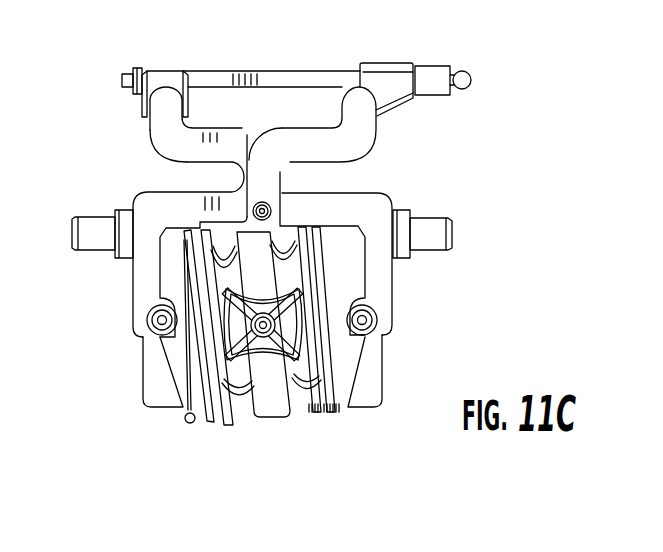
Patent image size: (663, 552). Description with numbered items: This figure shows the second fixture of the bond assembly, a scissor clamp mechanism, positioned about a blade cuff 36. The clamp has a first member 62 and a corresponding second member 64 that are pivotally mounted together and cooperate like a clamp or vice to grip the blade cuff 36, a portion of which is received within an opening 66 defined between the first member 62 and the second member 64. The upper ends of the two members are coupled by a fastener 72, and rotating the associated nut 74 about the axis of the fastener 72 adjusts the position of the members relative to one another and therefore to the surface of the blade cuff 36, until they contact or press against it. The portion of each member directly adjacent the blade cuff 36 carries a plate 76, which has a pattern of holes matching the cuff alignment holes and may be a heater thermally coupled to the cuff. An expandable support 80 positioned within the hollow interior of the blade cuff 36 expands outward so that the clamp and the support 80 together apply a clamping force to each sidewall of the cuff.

The blade cuff 36 is at (274, 398).
The first member 62 is at (175, 208).
The second member 64 is at (370, 213).
The opening 66 is at (264, 203).
The fastener 72 is at (226, 80).
The nut 74 is at (392, 82).
The plate 76 is at (148, 372).
The expandable support 80 is at (287, 317).